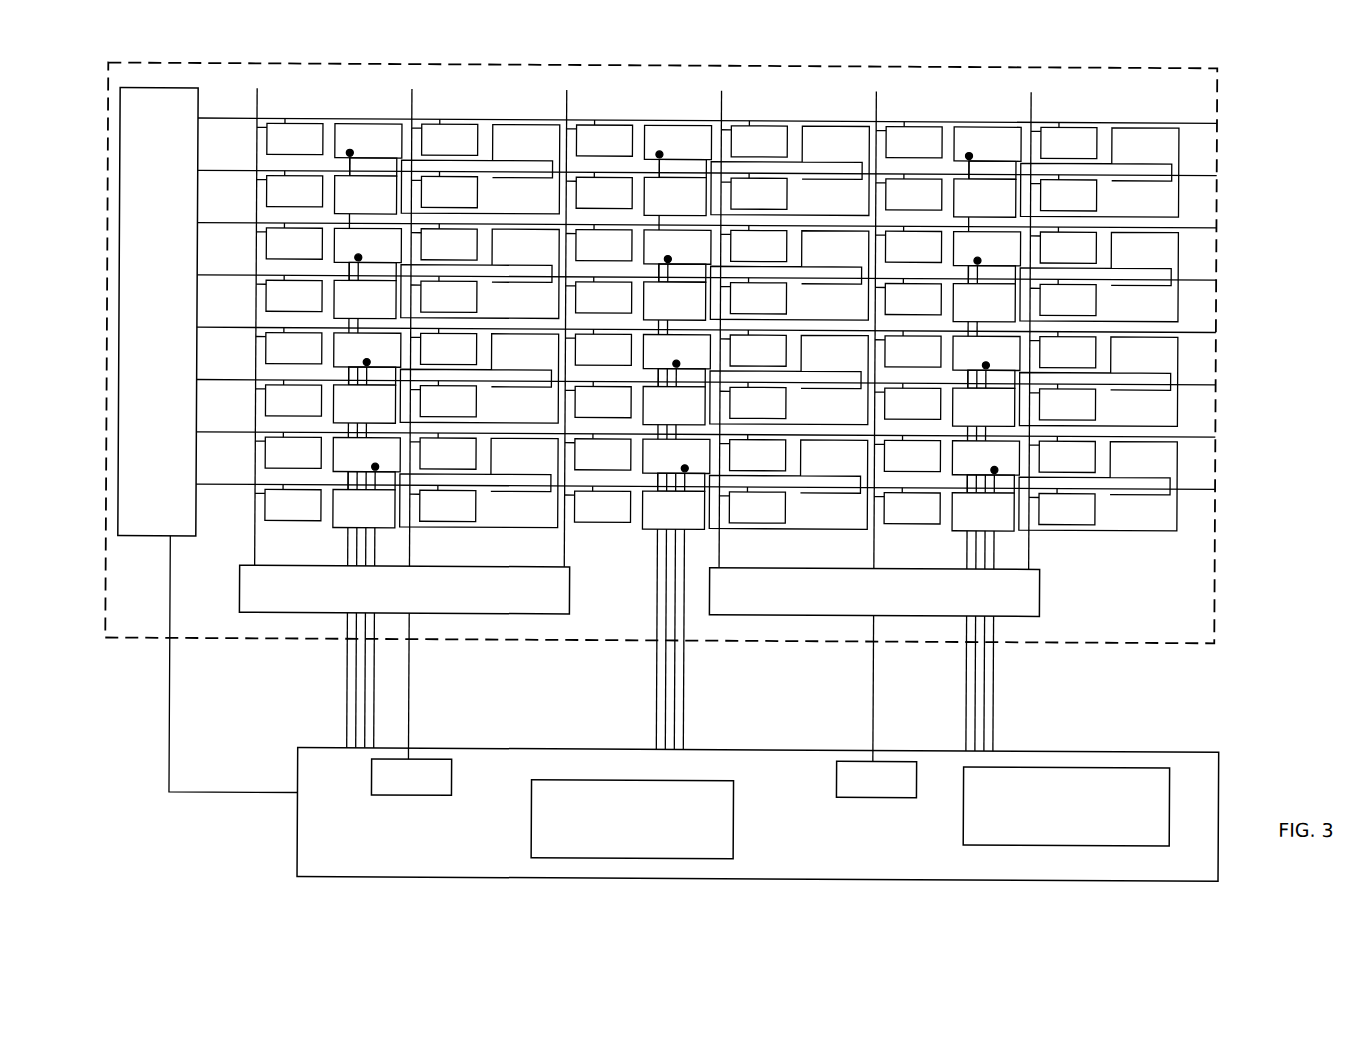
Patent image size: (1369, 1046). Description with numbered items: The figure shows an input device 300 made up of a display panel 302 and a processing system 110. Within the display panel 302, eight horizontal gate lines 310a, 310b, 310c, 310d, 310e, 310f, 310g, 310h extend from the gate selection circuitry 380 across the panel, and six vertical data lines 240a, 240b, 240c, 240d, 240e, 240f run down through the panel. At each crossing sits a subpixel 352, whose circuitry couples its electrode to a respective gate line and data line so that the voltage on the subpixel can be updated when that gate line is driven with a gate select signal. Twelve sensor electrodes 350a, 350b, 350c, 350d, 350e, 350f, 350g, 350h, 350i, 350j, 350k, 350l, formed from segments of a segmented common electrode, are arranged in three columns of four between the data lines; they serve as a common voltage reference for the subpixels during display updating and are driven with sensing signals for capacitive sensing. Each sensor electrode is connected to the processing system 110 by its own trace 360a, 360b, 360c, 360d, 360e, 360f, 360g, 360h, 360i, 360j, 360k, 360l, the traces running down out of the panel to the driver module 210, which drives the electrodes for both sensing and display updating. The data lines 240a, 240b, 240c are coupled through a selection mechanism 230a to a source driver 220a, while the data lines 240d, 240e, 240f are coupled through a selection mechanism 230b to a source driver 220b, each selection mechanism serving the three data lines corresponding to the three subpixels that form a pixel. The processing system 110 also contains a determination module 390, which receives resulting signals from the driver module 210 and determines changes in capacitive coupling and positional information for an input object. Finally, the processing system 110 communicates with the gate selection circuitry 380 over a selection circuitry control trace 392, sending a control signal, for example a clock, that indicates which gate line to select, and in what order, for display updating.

The processing system 110 is at (411, 829).
The driver module 210 is at (618, 821).
The source driver 220a is at (393, 787).
The source driver 220b is at (858, 787).
The selection mechanism 230a is at (385, 600).
The selection mechanism 230b is at (856, 599).
The data line 240a is at (258, 99).
The data line 240b is at (413, 99).
The data line 240c is at (568, 99).
The data line 240d is at (722, 99).
The data line 240e is at (877, 99).
The data line 240f is at (1032, 99).
The input device 300 is at (192, 46).
The display panel 302 is at (1217, 87).
The gate line 310a is at (1217, 118).
The gate line 310b is at (1217, 170).
The gate line 310c is at (1217, 223).
The gate line 310d is at (1217, 275).
The gate line 310e is at (1217, 327).
The gate line 310f is at (1217, 380).
The gate line 310g is at (1217, 432).
The gate line 310h is at (1217, 484).
The sensor electrode 350a is at (346, 149).
The sensor electrode 350b is at (346, 254).
The sensor electrode 350c is at (346, 358).
The sensor electrode 350d is at (346, 463).
The sensor electrode 350e is at (700, 149).
The sensor electrode 350f is at (700, 254).
The sensor electrode 350g is at (700, 358).
The sensor electrode 350h is at (700, 463).
The sensor electrode 350i is at (965, 149).
The sensor electrode 350j is at (965, 254).
The sensor electrode 350k is at (965, 358).
The sensor electrode 350l is at (965, 463).
The subpixel 352 is at (676, 321).
The trace 360a is at (350, 661).
The trace 360b is at (359, 681).
The trace 360c is at (368, 701).
The trace 360d is at (377, 722).
The trace 360e is at (660, 659).
The trace 360f is at (669, 679).
The trace 360g is at (678, 699).
The trace 360h is at (687, 720).
The trace 360i is at (969, 657).
The trace 360j is at (978, 677).
The trace 360k is at (987, 697).
The trace 360l is at (996, 718).
The gate selection circuitry 380 is at (138, 511).
The determination module 390 is at (1050, 808).
The selection circuitry control trace 392 is at (250, 792).